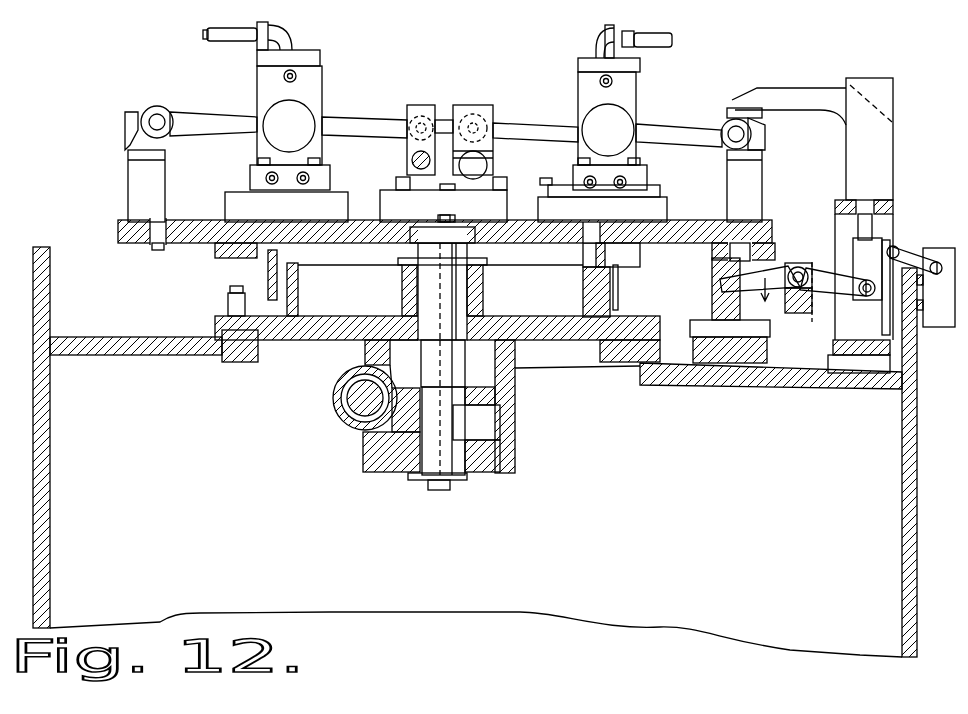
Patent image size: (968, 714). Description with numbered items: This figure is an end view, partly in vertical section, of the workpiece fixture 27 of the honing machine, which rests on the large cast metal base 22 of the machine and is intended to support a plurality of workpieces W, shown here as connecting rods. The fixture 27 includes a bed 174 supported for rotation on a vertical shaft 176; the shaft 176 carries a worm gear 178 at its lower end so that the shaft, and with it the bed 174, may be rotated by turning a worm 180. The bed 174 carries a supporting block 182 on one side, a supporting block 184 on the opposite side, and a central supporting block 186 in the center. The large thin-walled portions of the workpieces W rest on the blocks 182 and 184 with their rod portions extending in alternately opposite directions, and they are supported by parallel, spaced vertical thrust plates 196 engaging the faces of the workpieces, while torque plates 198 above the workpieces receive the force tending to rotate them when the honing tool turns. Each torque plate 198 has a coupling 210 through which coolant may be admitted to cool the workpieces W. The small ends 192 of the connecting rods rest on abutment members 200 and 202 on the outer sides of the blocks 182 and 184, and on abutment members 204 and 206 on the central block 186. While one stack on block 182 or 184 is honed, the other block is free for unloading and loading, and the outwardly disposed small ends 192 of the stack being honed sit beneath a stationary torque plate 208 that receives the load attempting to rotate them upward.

The base 22 is at (42, 465).
The fixture 27 is at (120, 213).
The bed 174 is at (196, 218).
The vertical shaft 176 is at (452, 311).
The worm gear 178 is at (514, 410).
The worm 180 is at (340, 420).
The supporting block 182 is at (348, 197).
The supporting block 184 is at (653, 208).
The central supporting block 186 is at (495, 207).
The small end 192 is at (148, 108).
The thrust plate 196 is at (322, 84).
The torque plate 198 is at (304, 56).
The abutment member 200 is at (130, 143).
The abutment member 202 is at (753, 156).
The abutment member 204 is at (434, 120).
The abutment member 206 is at (497, 133).
The stationary torque plate 208 is at (725, 112).
The coupling 210 is at (281, 33).
The workpiece W is at (198, 112).